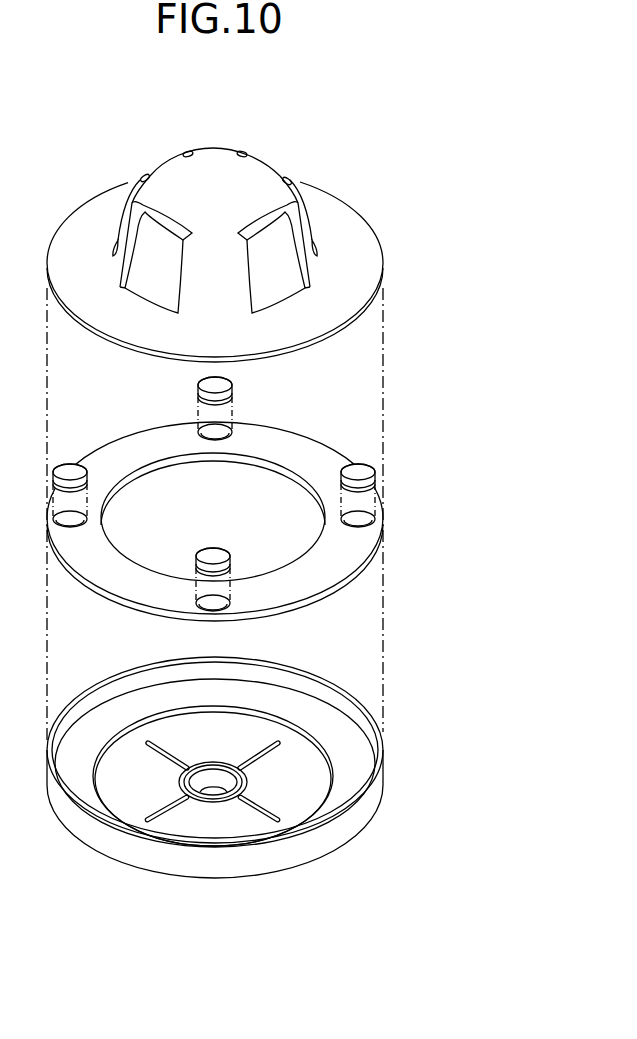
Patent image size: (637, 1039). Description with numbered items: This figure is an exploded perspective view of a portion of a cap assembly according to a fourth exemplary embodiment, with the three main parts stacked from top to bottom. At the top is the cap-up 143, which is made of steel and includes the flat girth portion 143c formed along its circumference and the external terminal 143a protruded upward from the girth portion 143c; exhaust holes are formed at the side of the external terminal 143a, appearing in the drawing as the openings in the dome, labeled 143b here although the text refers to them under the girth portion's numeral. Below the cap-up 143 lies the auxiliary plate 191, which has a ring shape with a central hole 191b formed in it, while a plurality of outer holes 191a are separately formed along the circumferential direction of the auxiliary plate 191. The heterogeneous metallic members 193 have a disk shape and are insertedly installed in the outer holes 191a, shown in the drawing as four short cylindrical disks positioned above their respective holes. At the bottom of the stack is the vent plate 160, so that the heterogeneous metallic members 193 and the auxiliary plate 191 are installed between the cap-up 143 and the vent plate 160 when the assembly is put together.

The cap-up 143 is at (255, 238).
The external terminal 143a is at (243, 187).
The elastic tab window 143b is at (276, 268).
The girth portion 143c is at (332, 218).
The auxiliary plate 191 is at (262, 499).
The outer holes 191a is at (360, 532).
The central hole 191b is at (257, 460).
The heterogeneous metallic members 193 is at (353, 470).
The vent plate 160 is at (368, 713).